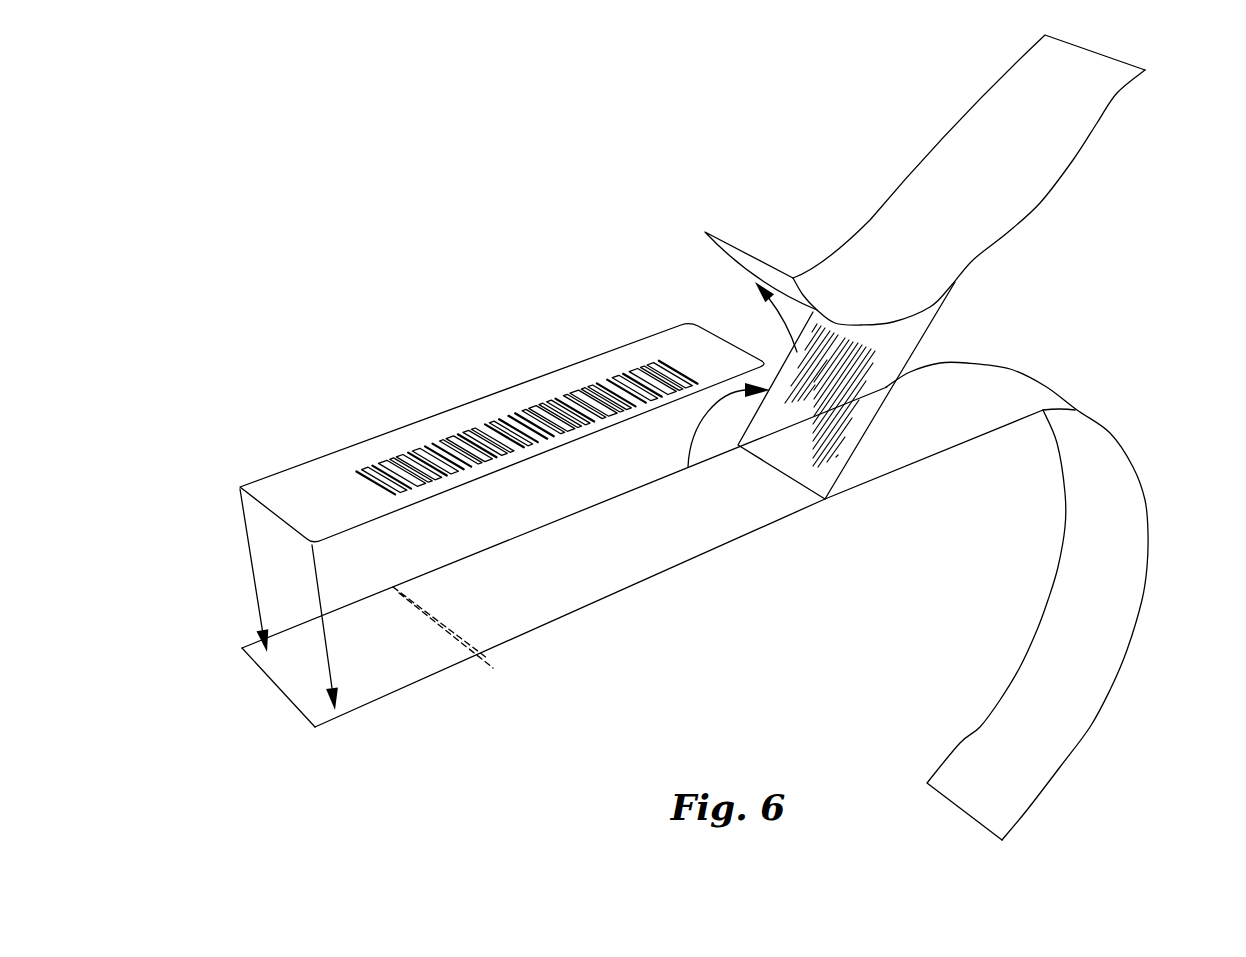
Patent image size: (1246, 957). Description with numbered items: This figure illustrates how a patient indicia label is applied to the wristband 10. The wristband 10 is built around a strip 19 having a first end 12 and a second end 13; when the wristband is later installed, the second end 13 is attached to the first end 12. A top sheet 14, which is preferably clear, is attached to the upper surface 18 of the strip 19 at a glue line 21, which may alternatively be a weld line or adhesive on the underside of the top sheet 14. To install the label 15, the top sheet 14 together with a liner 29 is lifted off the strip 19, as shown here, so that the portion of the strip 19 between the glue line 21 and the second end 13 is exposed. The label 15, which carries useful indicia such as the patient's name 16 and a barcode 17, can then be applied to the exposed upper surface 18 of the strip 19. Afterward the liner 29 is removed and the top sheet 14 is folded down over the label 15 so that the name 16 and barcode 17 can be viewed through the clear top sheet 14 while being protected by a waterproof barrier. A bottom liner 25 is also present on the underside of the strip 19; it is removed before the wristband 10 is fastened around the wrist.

The wristband 10 is at (1142, 312).
The first end 12 is at (957, 803).
The second end 13 is at (285, 675).
The top sheet 14 is at (930, 324).
The label 15 is at (470, 396).
The name 16 is at (531, 382).
The barcode 17 is at (553, 450).
The upper surface 18 is at (584, 577).
The strip 19 is at (715, 562).
The glue line 21 is at (826, 500).
The bottom liner 25 is at (485, 660).
The liner 29 is at (871, 220).